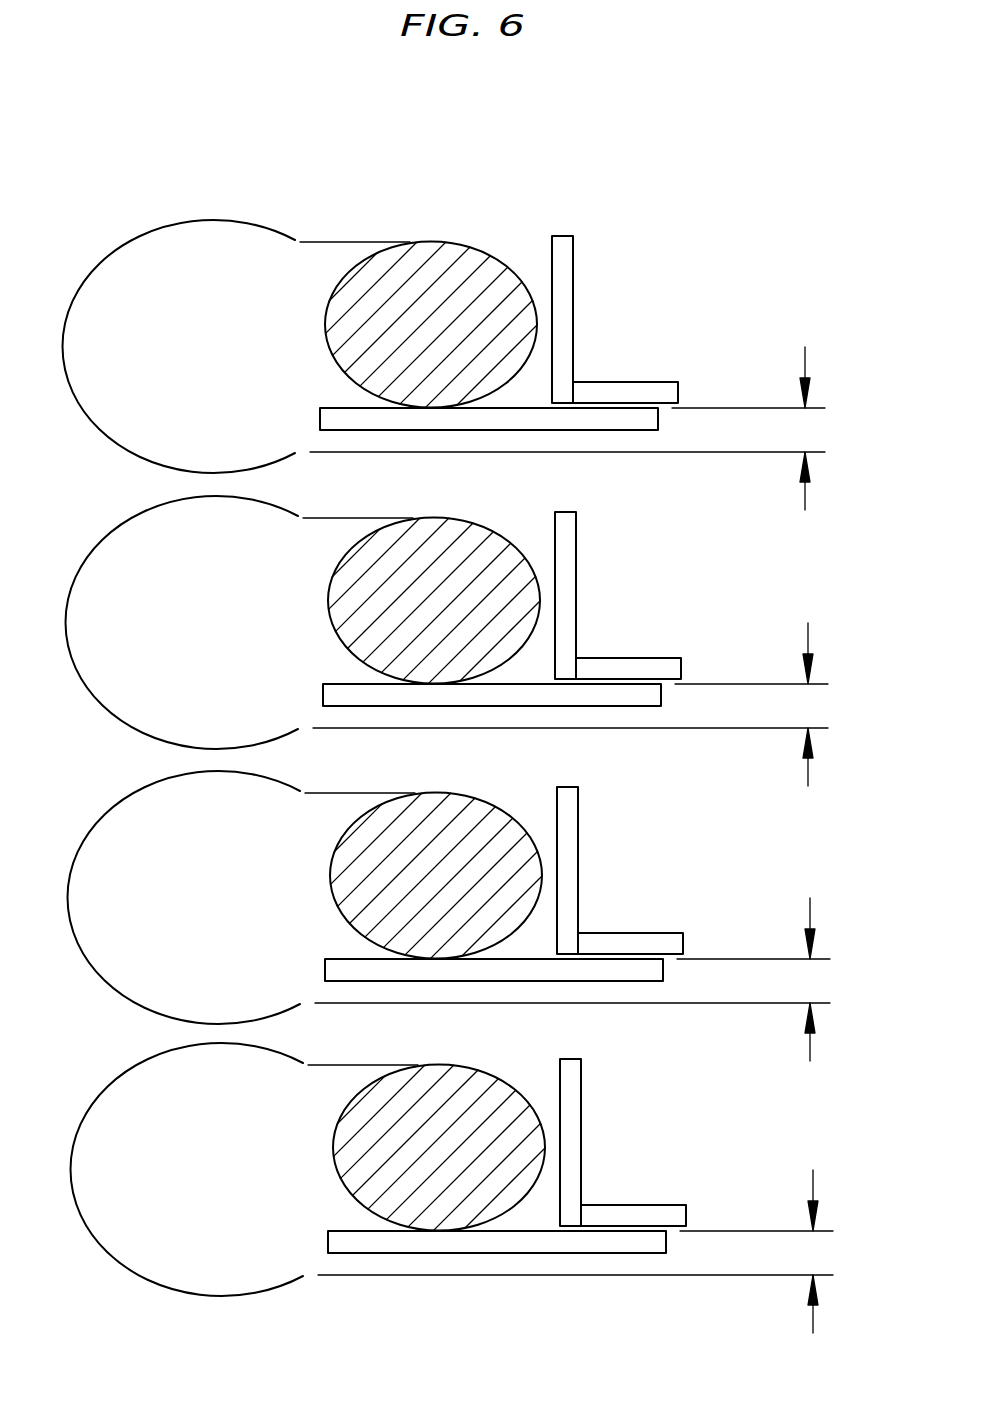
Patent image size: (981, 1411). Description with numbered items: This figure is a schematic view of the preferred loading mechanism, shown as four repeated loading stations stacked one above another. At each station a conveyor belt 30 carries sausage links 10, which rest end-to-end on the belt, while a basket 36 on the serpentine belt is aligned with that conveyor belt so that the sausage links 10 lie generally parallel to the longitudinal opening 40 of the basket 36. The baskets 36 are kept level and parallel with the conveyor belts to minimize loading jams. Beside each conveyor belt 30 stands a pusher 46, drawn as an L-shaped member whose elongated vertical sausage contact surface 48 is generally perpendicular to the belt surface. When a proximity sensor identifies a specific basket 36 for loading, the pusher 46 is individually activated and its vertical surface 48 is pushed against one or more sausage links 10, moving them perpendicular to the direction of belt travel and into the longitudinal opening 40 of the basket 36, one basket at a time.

The sausage link 10 is at (483, 250).
The conveyor belt 30 is at (592, 418).
The basket 36 is at (118, 246).
The longitudinal opening 40 is at (233, 262).
The pusher 46 is at (612, 387).
The elongated vertical sausage contact surface 48 is at (550, 287).